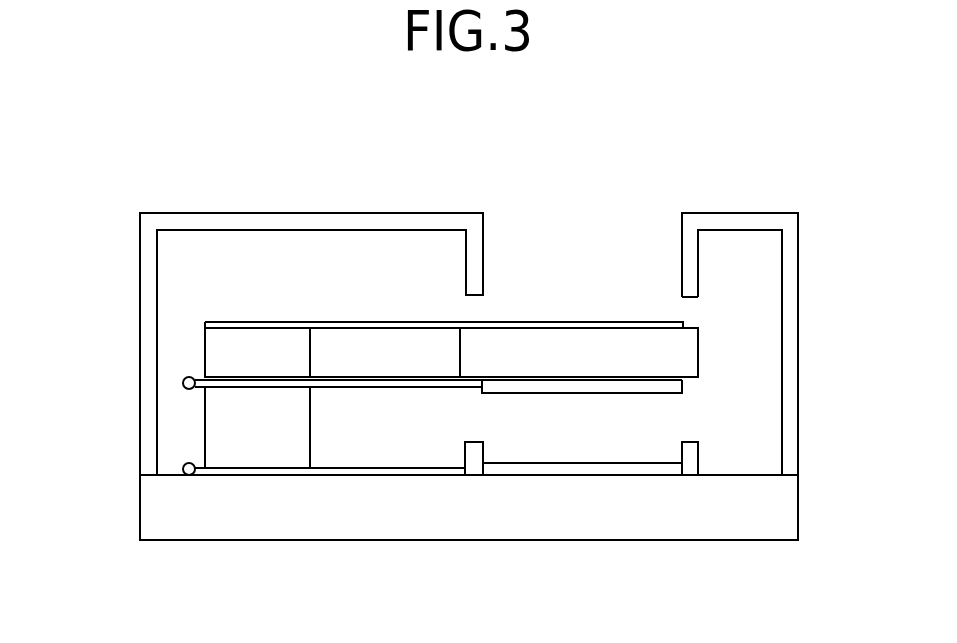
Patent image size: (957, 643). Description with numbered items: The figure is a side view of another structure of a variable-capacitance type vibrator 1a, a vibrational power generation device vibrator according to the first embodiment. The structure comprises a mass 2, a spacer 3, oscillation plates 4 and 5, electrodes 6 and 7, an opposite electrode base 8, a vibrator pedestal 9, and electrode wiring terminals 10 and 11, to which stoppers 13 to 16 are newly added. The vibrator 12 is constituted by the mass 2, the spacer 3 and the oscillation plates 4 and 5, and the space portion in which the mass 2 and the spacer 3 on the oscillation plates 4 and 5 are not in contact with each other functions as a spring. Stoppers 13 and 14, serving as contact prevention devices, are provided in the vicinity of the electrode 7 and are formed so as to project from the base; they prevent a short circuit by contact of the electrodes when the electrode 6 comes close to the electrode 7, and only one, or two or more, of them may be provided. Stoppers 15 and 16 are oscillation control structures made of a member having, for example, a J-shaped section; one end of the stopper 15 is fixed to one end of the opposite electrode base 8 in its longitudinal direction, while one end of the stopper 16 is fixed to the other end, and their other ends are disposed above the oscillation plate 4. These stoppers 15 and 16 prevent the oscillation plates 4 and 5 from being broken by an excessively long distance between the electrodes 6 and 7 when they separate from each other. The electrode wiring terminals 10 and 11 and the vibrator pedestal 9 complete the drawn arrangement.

The variable-capacitance type vibrator 1a is at (810, 115).
The mass 2 is at (627, 350).
The spacer 3 is at (217, 354).
The oscillation plate 4 is at (527, 320).
The oscillation plate 5 is at (682, 380).
The electrode 6 is at (540, 390).
The electrode 7 is at (582, 465).
The opposite electrode base 8 is at (786, 507).
The vibrator pedestal 9 is at (217, 436).
The electrode wiring terminal 10 is at (183, 388).
The electrode wiring terminal 11 is at (183, 473).
The vibrator 12 is at (412, 337).
The stopper 13 is at (698, 447).
The stopper 14 is at (472, 447).
The stopper 15 is at (705, 213).
The stopper 16 is at (384, 213).